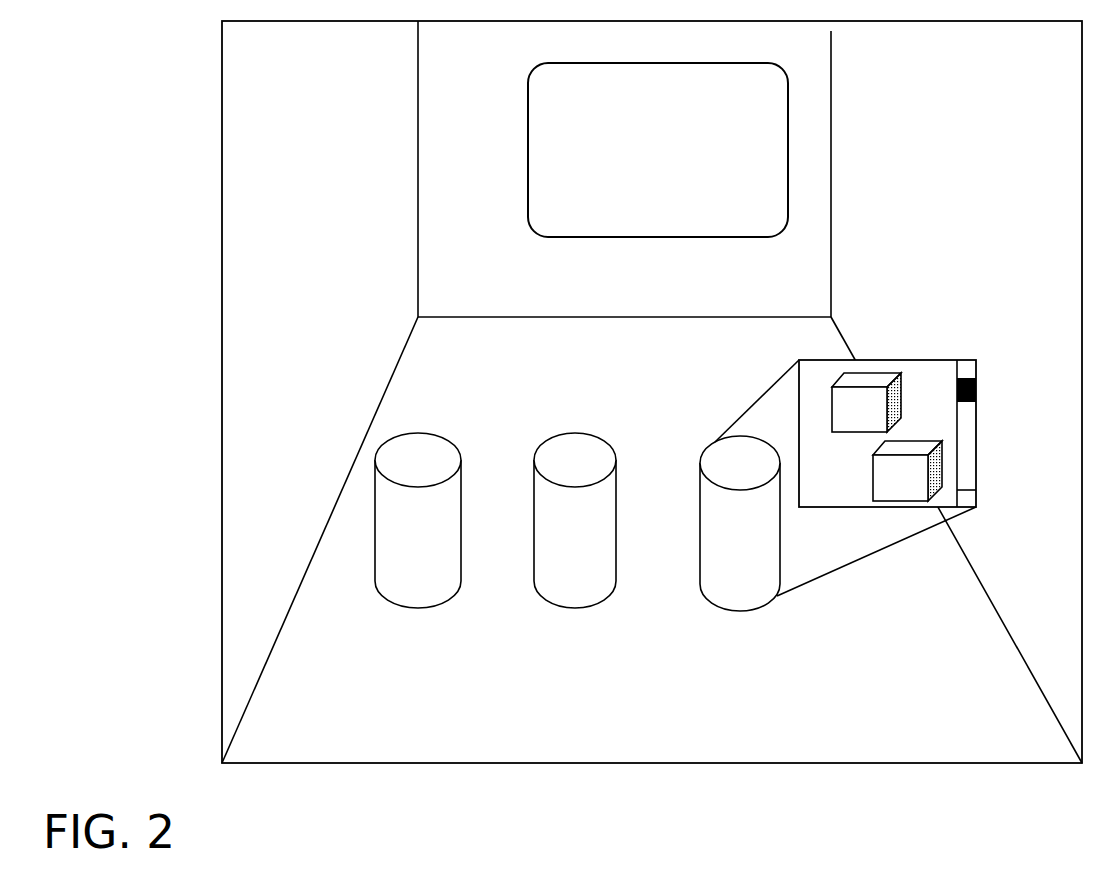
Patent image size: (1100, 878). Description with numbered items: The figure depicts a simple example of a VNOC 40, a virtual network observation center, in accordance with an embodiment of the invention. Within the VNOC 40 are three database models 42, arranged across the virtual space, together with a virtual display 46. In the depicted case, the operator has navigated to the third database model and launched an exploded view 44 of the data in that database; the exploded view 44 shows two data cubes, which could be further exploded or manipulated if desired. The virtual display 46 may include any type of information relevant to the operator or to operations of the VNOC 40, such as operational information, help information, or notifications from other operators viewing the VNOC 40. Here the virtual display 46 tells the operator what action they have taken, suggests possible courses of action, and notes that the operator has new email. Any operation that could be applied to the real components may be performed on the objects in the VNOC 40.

The VNOC 40 is at (318, 219).
The database models 42 is at (668, 653).
The exploded view 44 is at (877, 366).
The virtual display 46 is at (528, 180).